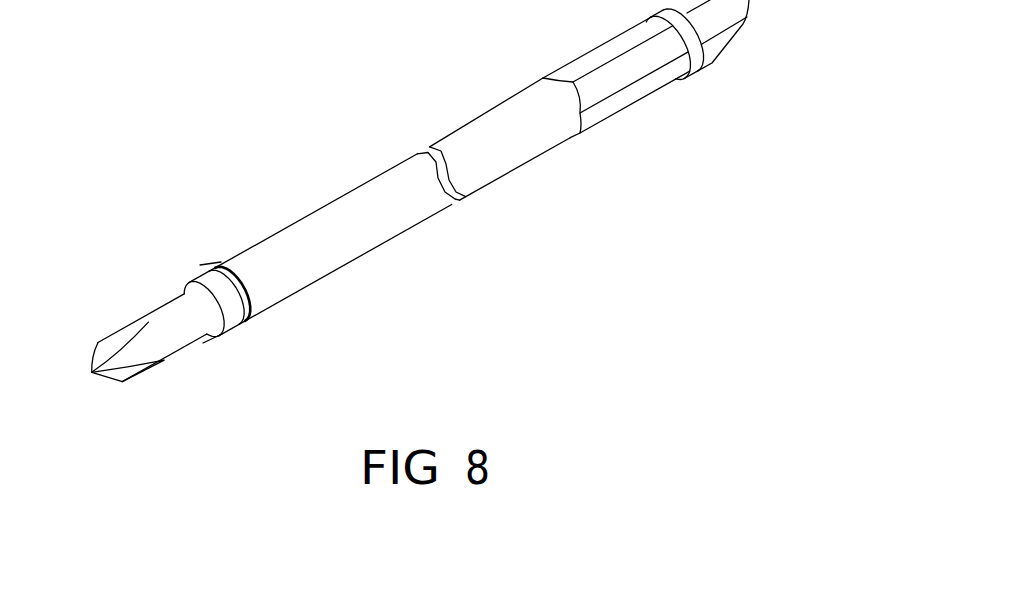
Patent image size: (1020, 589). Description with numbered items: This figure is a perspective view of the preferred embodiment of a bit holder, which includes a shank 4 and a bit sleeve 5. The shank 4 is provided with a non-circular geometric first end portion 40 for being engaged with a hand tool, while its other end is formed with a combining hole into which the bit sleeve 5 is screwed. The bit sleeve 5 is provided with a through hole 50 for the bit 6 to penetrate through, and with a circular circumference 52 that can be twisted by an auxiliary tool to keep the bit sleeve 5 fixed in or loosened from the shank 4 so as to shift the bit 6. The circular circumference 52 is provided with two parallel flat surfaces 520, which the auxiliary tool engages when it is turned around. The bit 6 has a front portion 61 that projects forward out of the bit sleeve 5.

The shank 4 is at (505, 167).
The first end portion 40 is at (720, 53).
The bit sleeve 5 is at (255, 300).
The through hole 50 is at (212, 337).
The circular circumference 52 is at (232, 322).
The flat surfaces 520 is at (210, 272).
The bit 6 is at (137, 295).
The front portion 61 is at (173, 317).